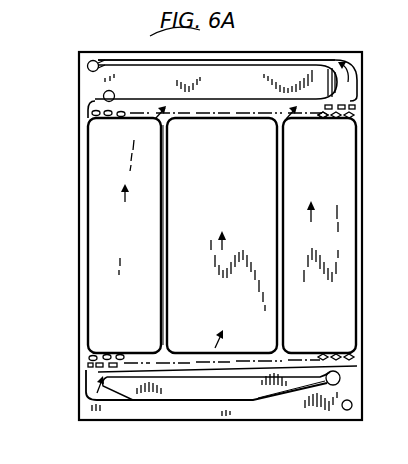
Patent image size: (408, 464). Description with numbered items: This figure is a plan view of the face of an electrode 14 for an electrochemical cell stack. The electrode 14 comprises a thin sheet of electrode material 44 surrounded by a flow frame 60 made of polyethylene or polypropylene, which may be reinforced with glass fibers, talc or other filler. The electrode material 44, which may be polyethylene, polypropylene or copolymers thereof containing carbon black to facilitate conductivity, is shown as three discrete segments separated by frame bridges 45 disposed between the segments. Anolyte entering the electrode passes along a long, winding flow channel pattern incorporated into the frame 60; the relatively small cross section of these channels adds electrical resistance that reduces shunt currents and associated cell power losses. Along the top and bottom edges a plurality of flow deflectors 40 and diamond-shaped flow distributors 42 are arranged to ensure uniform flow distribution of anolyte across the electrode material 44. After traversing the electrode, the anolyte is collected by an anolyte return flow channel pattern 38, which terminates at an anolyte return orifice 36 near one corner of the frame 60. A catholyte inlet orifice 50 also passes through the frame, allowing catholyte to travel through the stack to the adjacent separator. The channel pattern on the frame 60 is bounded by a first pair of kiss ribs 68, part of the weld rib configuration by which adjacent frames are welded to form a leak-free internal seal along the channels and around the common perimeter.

The electrode 14 is at (74, 172).
The anolyte return orifice 36 is at (87, 67).
The anolyte return flow channel pattern 38 is at (284, 61).
The flow deflectors 40 is at (337, 104).
The flow distributors 42 is at (323, 120).
The electrode material 44 is at (334, 231).
The frame bridge 45 is at (164, 230).
The catholyte inlet orifice 50 is at (103, 96).
The flow frame 60 is at (312, 56).
The first pair of kiss ribs 68 is at (224, 72).